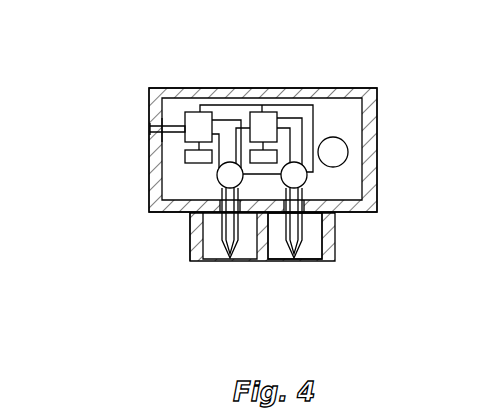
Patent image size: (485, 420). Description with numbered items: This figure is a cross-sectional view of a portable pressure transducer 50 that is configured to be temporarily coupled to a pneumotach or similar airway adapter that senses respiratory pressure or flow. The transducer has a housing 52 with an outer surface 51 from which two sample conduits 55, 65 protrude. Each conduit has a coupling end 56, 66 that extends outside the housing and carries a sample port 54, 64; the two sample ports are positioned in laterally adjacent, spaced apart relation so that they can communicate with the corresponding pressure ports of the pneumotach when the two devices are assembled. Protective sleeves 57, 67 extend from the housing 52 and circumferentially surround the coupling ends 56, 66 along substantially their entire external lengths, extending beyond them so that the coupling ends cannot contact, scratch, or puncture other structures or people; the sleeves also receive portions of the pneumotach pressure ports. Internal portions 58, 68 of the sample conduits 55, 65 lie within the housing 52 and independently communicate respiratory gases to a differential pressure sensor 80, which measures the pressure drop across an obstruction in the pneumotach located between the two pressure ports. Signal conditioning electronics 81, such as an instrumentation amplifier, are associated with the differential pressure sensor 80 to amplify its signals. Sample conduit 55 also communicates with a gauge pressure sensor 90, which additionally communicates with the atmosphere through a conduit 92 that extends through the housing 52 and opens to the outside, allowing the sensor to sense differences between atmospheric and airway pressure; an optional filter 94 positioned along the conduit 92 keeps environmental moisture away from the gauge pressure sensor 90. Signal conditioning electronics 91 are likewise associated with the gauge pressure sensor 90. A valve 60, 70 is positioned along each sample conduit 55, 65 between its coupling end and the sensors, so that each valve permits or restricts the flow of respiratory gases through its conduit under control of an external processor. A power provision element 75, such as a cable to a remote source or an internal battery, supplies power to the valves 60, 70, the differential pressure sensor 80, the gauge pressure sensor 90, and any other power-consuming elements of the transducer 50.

The portable pressure transducer 50 is at (102, 73).
The outer surface 51 is at (378, 120).
The housing 52 is at (380, 90).
The sample port 54 is at (294, 262).
The sample conduit 55 is at (350, 247).
The coupling end 56 is at (324, 260).
The protective sleeve 57 is at (336, 215).
The internal portion 58 is at (297, 238).
The valve 60 is at (316, 113).
The sample port 64 is at (230, 262).
The sample conduit 65 is at (176, 249).
The coupling end 66 is at (221, 238).
The protective sleeve 67 is at (190, 227).
The internal portion 68 is at (217, 167).
The valve 70 is at (244, 136).
The power provision element 75 is at (340, 152).
The differential pressure sensor 80 is at (256, 120).
The signal conditioning electronics 81 is at (268, 157).
The gauge pressure sensor 90 is at (192, 120).
The signal conditioning electronics 91 is at (184, 157).
The conduit 92 is at (157, 137).
The filter 94 is at (159, 125).